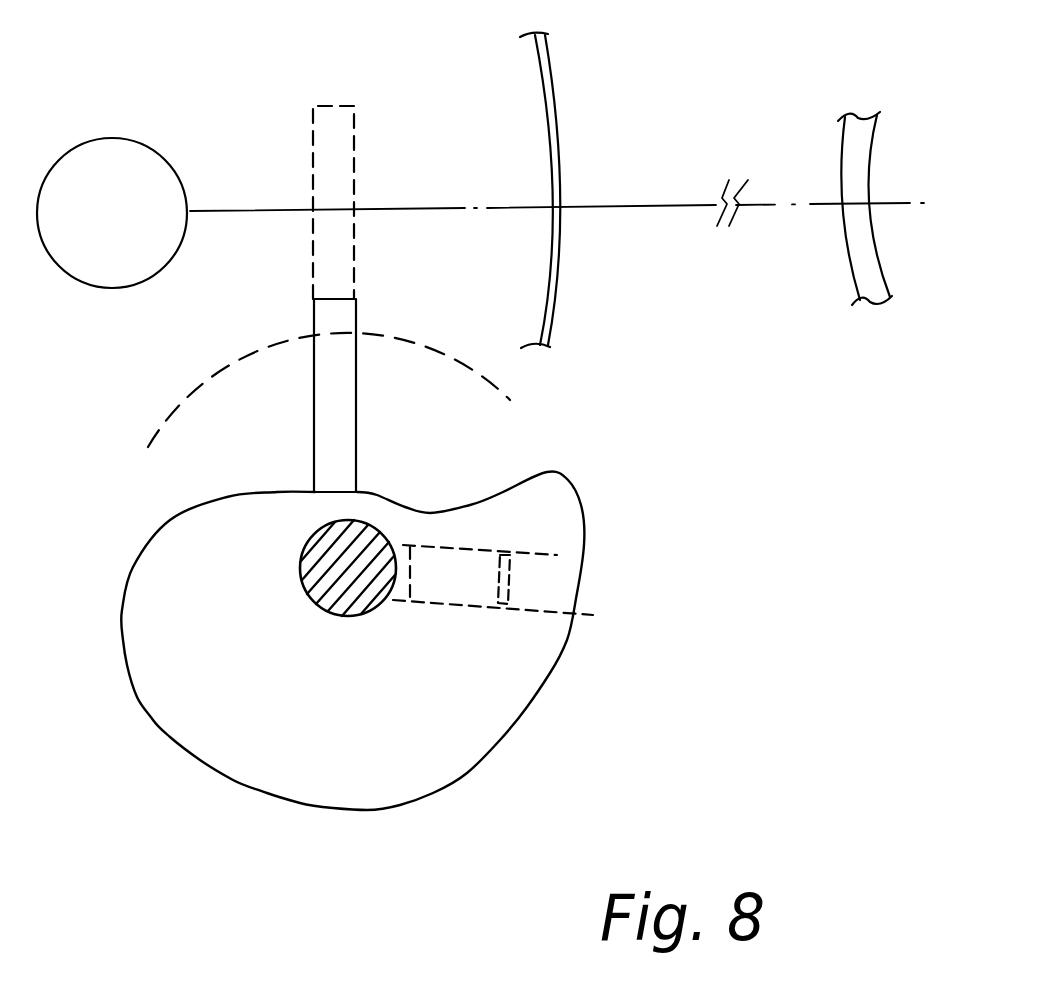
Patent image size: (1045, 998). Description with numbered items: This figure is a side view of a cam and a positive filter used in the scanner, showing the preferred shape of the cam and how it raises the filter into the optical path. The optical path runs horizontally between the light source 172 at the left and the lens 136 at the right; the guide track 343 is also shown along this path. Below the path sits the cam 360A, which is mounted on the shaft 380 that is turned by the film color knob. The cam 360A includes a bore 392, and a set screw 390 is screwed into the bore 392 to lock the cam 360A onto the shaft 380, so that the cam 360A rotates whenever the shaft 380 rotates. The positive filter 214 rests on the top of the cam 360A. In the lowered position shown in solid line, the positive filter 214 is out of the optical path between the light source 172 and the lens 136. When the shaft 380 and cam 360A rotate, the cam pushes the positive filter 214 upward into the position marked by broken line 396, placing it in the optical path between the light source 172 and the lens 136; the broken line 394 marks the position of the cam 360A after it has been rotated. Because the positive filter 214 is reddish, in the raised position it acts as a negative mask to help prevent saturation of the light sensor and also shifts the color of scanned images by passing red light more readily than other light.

The light source 172 is at (105, 138).
The broken line 396 is at (330, 102).
The positive filter 214 is at (357, 313).
The guide track 343 is at (552, 75).
The lens 136 is at (843, 135).
The broken line 394 is at (513, 400).
The cam 360A is at (140, 558).
The shaft 380 is at (320, 607).
The bore 392 is at (560, 555).
The set screw 390 is at (503, 592).